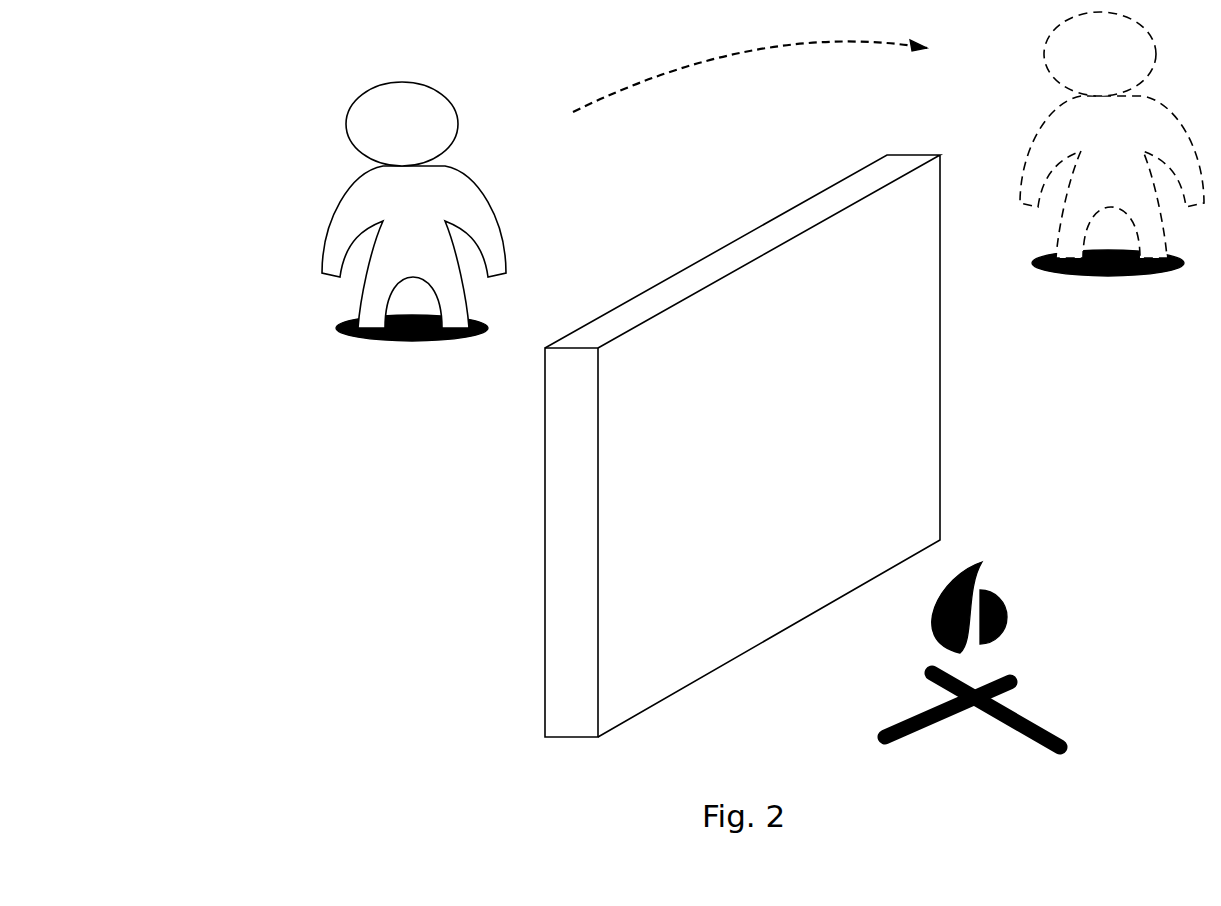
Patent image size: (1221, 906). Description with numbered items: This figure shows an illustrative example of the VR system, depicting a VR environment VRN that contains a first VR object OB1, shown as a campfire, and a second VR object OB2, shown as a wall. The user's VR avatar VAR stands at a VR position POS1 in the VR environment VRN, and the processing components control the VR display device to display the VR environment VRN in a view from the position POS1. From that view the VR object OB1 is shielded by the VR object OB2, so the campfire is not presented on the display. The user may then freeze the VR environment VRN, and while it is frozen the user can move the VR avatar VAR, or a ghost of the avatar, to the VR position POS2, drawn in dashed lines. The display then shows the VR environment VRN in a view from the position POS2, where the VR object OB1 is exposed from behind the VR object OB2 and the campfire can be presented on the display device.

The VR environment VRN is at (212, 61).
The VR avatar VAR is at (414, 190).
The VR position POS1 is at (412, 344).
The VR position POS2 is at (1112, 160).
The first VR object OB1 is at (972, 675).
The second VR object OB2 is at (811, 459).